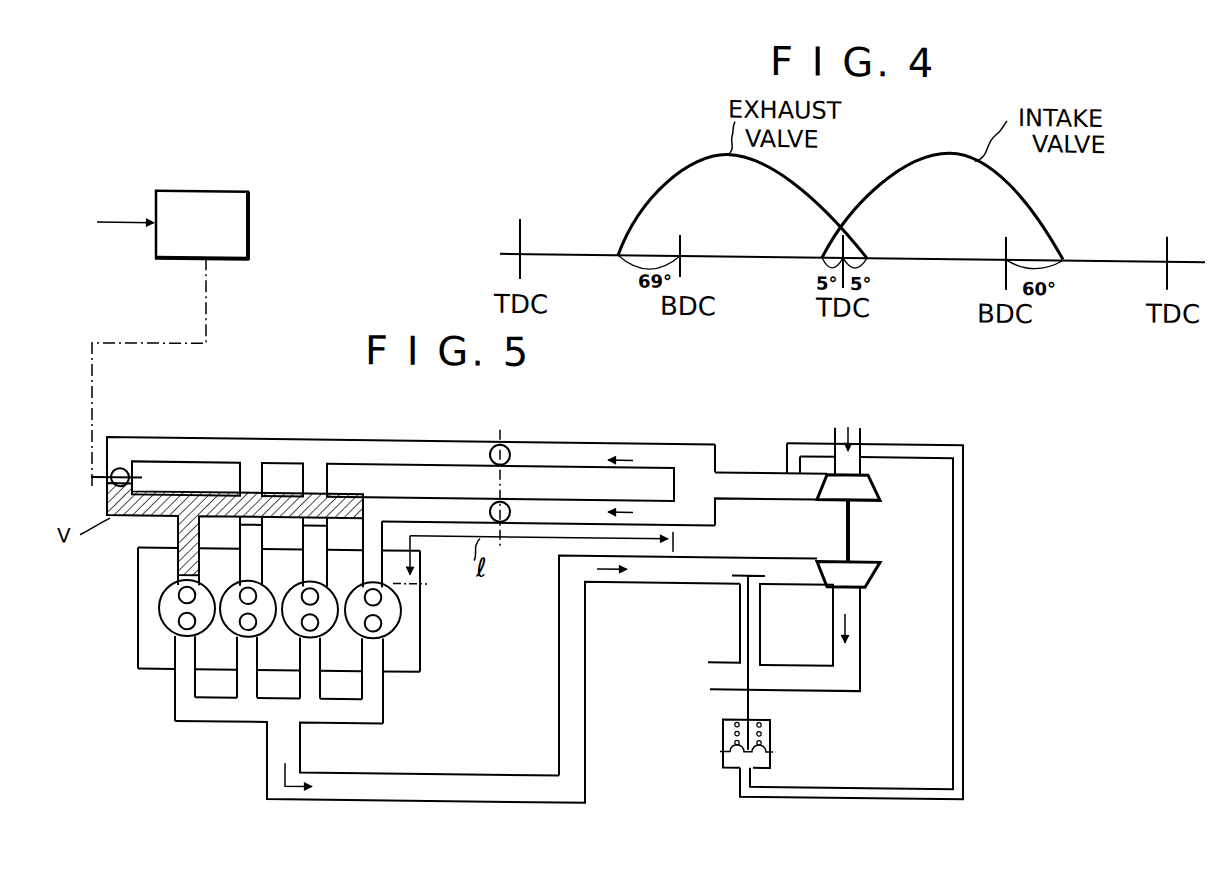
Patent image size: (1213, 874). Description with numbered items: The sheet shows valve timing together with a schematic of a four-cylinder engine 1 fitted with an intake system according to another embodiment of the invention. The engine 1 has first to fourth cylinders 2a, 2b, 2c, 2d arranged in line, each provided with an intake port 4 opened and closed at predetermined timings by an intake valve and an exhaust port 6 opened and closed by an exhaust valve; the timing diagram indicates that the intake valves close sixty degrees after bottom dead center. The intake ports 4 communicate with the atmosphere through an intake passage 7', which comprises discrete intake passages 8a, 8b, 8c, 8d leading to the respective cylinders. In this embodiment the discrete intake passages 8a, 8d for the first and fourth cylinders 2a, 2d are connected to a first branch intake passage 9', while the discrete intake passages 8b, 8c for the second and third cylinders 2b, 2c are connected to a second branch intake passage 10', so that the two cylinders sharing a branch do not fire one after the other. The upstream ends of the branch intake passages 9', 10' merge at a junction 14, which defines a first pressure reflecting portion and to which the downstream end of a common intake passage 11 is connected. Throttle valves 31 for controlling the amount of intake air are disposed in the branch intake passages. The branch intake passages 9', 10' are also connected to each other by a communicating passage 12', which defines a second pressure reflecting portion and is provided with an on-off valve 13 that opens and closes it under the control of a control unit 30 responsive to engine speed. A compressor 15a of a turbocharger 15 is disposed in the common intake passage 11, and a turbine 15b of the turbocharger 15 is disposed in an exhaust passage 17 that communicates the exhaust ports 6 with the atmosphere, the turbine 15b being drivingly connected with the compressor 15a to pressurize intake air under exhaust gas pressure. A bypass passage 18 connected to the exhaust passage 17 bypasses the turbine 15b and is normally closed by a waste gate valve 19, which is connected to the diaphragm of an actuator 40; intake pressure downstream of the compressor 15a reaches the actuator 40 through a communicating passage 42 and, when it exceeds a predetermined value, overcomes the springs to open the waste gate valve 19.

The control unit 30 is at (250, 212).
The on-off valve 13 is at (118, 471).
The communicating passage 12' is at (209, 528).
The intake passage 7' is at (411, 452).
The second branch intake passage 10' is at (608, 427).
The first branch intake passage 9' is at (548, 551).
The junction 14 is at (693, 462).
The common intake passage 11 is at (758, 478).
The throttle valve 31 is at (529, 489).
The four-cylinder engine 1 is at (422, 605).
The discrete intake passage 8a is at (178, 537).
The discrete intake passage 8b is at (272, 474).
The discrete intake passage 8c is at (340, 473).
The discrete intake passage 8d is at (385, 530).
The first cylinder 2a is at (162, 618).
The second cylinder 2b is at (220, 626).
The third cylinder 2c is at (333, 635).
The fourth cylinder 2d is at (403, 625).
The intake port 4 is at (180, 602).
The exhaust port 6 is at (180, 634).
The exhaust passage 17 is at (586, 713).
The compressor 15a is at (875, 482).
The turbocharger 15 is at (873, 533).
The turbine 15b is at (865, 574).
The communicating passage 42 is at (958, 626).
The actuator 40 is at (724, 776).
The bypass passage 18 is at (738, 625).
The waste gate valve 19 is at (750, 598).